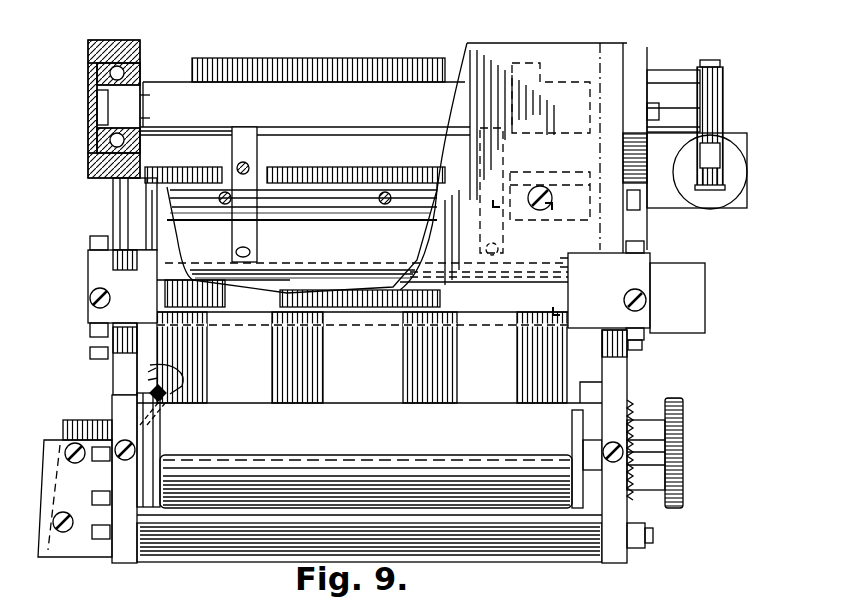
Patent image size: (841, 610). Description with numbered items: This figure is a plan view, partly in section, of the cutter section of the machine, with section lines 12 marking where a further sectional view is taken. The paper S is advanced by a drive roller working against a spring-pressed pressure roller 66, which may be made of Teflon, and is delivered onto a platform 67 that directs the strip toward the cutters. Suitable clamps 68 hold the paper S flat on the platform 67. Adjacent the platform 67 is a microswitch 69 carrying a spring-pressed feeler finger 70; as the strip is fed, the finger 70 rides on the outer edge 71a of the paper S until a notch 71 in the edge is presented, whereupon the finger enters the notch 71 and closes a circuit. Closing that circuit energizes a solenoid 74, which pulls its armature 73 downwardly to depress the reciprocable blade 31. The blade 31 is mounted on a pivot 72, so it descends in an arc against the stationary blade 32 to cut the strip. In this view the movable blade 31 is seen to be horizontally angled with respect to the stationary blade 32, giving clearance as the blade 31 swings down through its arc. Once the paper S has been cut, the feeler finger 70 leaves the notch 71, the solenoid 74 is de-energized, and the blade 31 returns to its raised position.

The section line 12- 12 is at (490, 22).
The reciprocable blade 31 is at (343, 250).
The stationary blade 32 is at (640, 278).
The pressure roller 66 is at (382, 414).
The platform 67 is at (143, 358).
The clamps 68 is at (272, 352).
The microswitch 69 is at (65, 428).
The feeler finger 70 is at (163, 400).
The notch 71 is at (182, 386).
The outer edge 71a is at (150, 373).
The paper S is at (148, 380).
The pivot 72 is at (668, 100).
The armature 73 is at (712, 165).
The solenoid 74 is at (728, 200).